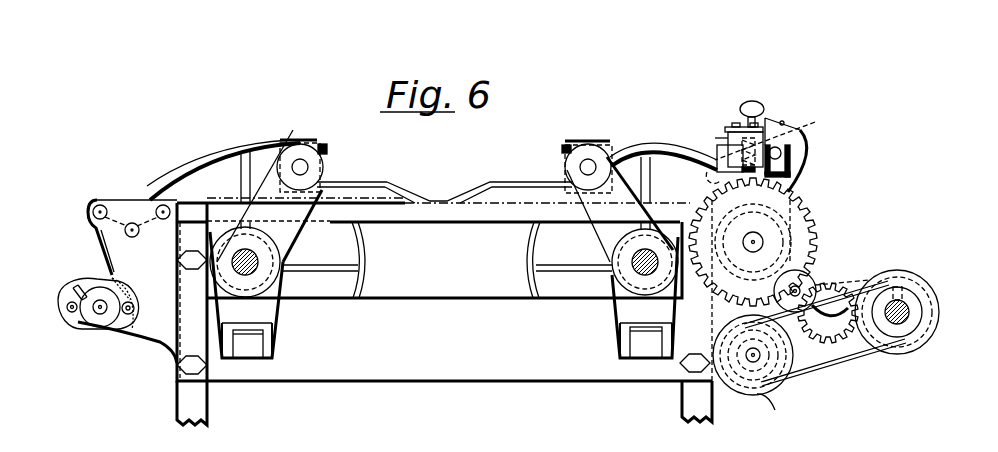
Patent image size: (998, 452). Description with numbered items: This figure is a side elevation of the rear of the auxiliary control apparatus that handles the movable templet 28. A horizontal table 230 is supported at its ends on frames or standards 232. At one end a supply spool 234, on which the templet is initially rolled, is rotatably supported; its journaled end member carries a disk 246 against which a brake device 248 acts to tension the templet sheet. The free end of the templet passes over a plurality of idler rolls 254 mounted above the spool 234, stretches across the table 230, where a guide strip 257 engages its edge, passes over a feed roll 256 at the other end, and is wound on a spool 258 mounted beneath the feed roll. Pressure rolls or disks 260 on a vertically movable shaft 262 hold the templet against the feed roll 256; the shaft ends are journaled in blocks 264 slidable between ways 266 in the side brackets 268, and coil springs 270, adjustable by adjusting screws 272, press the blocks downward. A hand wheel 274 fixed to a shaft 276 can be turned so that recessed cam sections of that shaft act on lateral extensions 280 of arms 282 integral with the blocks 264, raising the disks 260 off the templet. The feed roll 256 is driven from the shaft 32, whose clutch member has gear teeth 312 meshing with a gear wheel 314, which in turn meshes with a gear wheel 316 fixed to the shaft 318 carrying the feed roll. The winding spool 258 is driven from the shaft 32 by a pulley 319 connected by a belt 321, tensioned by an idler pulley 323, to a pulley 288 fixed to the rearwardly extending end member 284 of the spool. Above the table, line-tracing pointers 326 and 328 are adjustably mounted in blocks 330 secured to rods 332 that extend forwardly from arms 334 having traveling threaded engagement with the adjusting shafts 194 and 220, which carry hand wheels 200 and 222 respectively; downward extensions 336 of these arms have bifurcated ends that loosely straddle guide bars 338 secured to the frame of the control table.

The movable templet 28 is at (97, 241).
The shaft 32 is at (910, 312).
The shaft 194 is at (258, 256).
The hand wheel 200 is at (228, 147).
The shaft 220 is at (637, 258).
The hand wheel 222 is at (637, 147).
The horizontal table 230 is at (458, 212).
The frames or standards 232 is at (205, 412).
The spool 234 is at (100, 330).
The disk 246 is at (93, 312).
The brake device 248 is at (77, 305).
The idler rolls 254 is at (160, 205).
The feed roll 256 is at (790, 222).
The guide strip 257 is at (517, 202).
The spool 258 is at (770, 378).
The pressure rolls or disks 260 is at (712, 186).
The vertically movable shaft 262 is at (718, 173).
The journal blocks 264 is at (718, 145).
The ways 266 is at (747, 163).
The side brackets 268 is at (717, 138).
The coil springs 270 is at (772, 132).
The adjusting screws 272 is at (767, 98).
The hand wheel 274 is at (783, 121).
The shaft 276 is at (782, 153).
The lateral extensions 280 is at (785, 134).
The arms 282 is at (790, 170).
The end member 284 is at (753, 360).
The pulley 288 is at (783, 415).
The gear teeth 312 is at (909, 282).
The gear wheel 314 is at (838, 284).
The gear wheel 316 is at (793, 230).
The shaft 318 is at (760, 241).
The pulley 319 is at (938, 327).
The belt 321 is at (865, 352).
The idler pulley 323 is at (797, 293).
The line-tracing pointer 326 is at (470, 190).
The line-tracing pointer 328 is at (414, 176).
The blocks 330 is at (293, 131).
The rods 332 is at (308, 167).
The arms 334 is at (232, 180).
The downward extensions 336 is at (272, 320).
The guide bars 338 is at (253, 345).